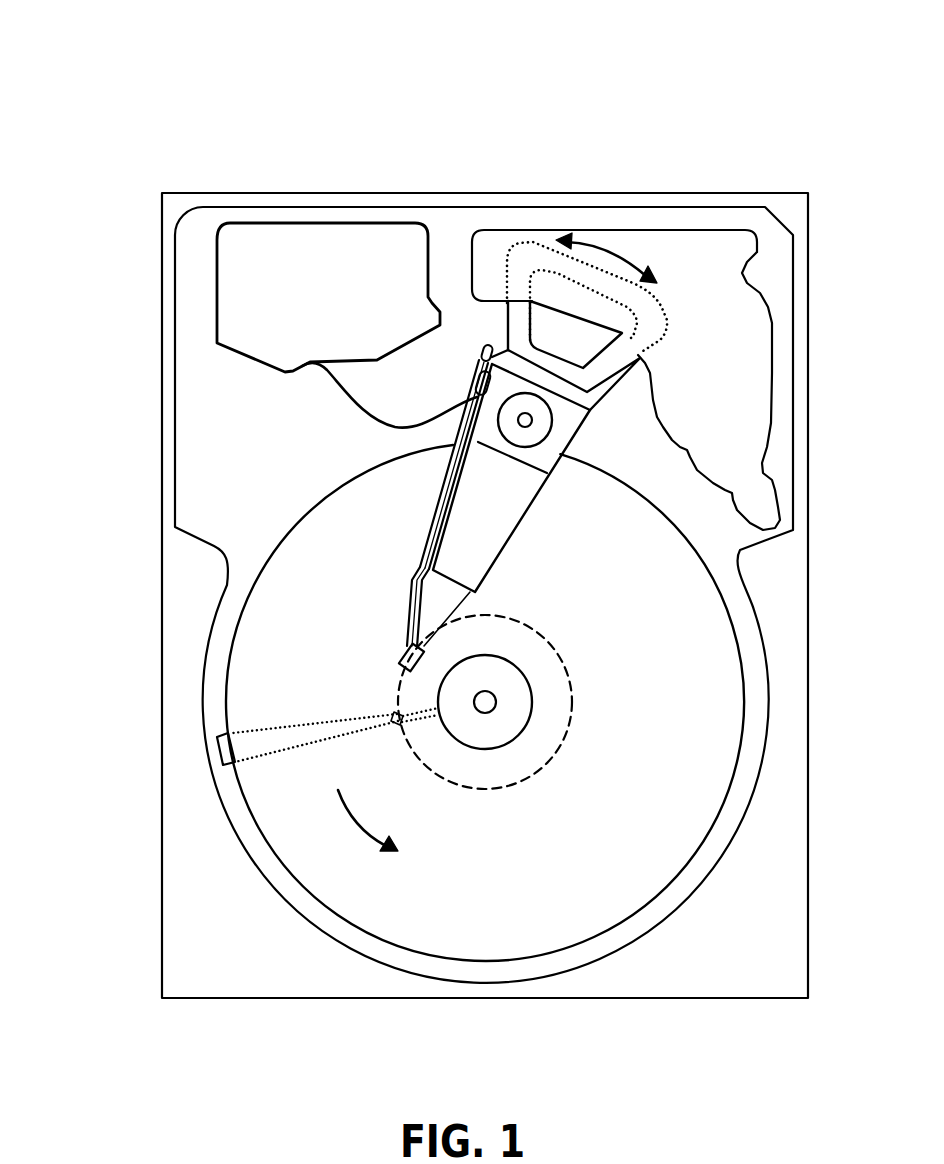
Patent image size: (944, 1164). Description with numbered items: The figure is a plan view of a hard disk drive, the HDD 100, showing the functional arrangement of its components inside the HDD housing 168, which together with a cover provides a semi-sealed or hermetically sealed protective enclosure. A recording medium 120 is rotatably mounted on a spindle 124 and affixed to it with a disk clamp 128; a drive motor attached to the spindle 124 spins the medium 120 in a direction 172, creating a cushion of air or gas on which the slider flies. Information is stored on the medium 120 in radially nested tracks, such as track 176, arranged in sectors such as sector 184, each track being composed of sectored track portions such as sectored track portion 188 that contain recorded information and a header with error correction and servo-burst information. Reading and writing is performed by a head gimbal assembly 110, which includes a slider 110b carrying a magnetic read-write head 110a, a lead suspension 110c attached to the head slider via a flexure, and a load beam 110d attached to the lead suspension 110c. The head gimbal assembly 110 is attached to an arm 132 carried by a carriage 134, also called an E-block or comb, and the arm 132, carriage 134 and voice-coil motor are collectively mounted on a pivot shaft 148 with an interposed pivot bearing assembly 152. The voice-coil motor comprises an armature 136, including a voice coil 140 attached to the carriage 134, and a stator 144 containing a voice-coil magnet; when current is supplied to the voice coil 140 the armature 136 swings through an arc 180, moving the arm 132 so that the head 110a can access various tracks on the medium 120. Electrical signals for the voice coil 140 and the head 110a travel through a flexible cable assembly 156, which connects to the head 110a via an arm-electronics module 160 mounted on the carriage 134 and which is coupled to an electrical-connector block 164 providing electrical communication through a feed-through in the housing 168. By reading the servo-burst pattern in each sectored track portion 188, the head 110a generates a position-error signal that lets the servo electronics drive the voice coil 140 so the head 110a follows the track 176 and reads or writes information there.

The hard disk drive 100 is at (86, 72).
The head gimbal assembly 110 is at (92, 505).
The magnetic read-write head 110a is at (398, 672).
The slider 110b is at (410, 645).
The lead suspension 110c is at (420, 608).
The load beam 110d is at (432, 578).
The recording medium 120 is at (668, 653).
The spindle 124 is at (492, 700).
The disk clamp 128 is at (510, 718).
The arm 132 is at (477, 537).
The carriage 134 is at (545, 453).
The armature 136 is at (500, 337).
The voice coil 140 is at (520, 315).
The stator 144 is at (737, 322).
The pivot shaft 148 is at (532, 420).
The pivot bearing assembly 152 is at (537, 432).
The flexible cable assembly 156 is at (342, 397).
The arm-electronics module 160 is at (478, 383).
The electrical-connector block 164 is at (242, 296).
The HDD housing 168 is at (794, 207).
The direction of medium rotation 172 is at (377, 826).
The track 176 is at (560, 663).
The arc 180 is at (605, 248).
The sector 184 is at (208, 750).
The sectored track portion 188 is at (390, 716).